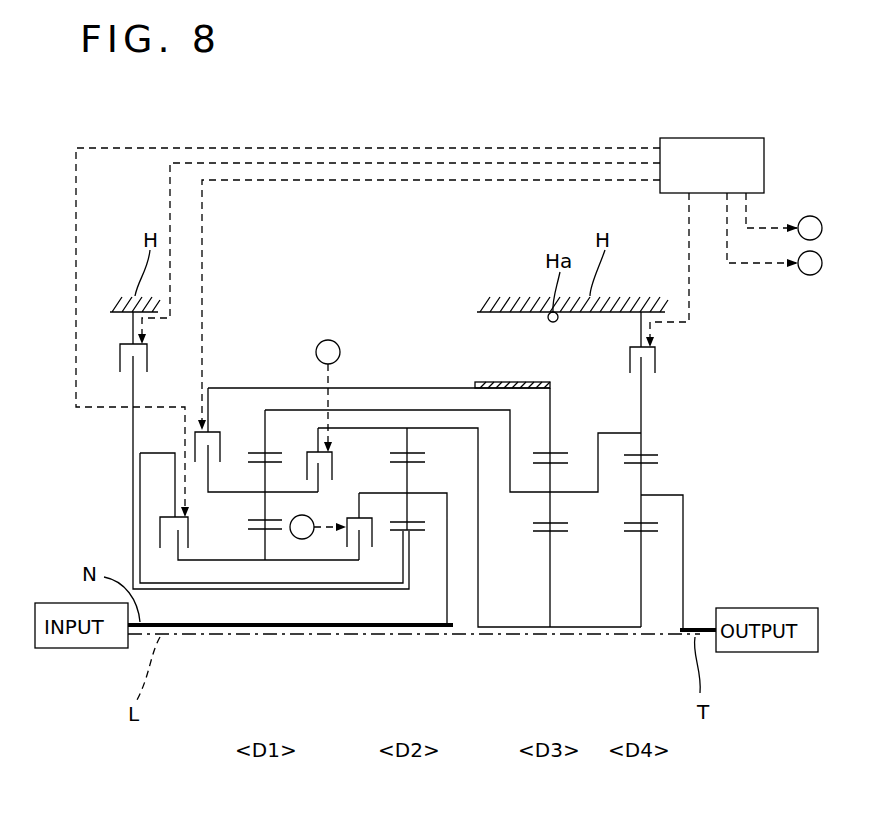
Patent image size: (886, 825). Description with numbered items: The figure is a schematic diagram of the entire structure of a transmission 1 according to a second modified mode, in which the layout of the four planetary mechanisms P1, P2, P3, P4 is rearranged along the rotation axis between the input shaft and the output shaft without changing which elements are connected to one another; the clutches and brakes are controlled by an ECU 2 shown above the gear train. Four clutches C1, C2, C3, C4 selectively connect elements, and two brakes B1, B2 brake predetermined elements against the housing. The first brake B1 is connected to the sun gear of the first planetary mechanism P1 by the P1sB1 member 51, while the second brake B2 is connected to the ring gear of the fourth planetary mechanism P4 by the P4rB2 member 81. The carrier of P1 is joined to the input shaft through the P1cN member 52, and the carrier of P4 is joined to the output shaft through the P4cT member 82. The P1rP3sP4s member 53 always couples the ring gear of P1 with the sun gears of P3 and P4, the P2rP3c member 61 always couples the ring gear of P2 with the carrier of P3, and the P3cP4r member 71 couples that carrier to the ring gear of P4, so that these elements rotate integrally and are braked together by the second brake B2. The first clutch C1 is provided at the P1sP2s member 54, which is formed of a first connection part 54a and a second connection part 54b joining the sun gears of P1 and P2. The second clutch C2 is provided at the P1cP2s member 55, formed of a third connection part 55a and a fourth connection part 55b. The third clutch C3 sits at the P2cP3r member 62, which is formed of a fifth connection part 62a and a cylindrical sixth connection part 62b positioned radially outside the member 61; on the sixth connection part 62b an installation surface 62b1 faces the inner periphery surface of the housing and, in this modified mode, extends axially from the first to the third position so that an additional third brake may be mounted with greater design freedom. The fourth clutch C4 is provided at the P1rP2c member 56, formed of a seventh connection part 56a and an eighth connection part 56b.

The transmission 1 is at (123, 125).
The ECU 2 is at (764, 168).
The P1sB1 member 51 is at (133, 397).
The P1cN member 52 is at (448, 602).
The P1rP3sP4s member 53 is at (608, 634).
The P1sP2s member 54 is at (207, 518).
The first connection part 54a is at (173, 468).
The second connection part 54b is at (170, 552).
The P1cP2s member 55 is at (389, 613).
The third connection part 55a is at (378, 494).
The fourth connection part 55b is at (332, 562).
The P1rP2c member 56 is at (453, 435).
The seventh connection part 56a is at (357, 428).
The eighth connection part 56b is at (288, 492).
The P2rP3c member 61 is at (515, 445).
The P2cP3r member 62 is at (372, 358).
The fifth connection part 62a is at (236, 489).
The sixth connection part 62b is at (218, 387).
The installation surface 62b1 is at (488, 382).
The P3cP4r member 71 is at (622, 433).
The P4rB2 member 81 is at (645, 398).
The P4cT member 82 is at (685, 528).
The first brake B1 is at (120, 357).
The second brake B2 is at (656, 360).
The first clutch C1 is at (188, 532).
The second clutch C2 is at (347, 540).
The third clutch C3 is at (195, 446).
The fourth clutch C4 is at (333, 467).
The first planetary mechanism P1 is at (418, 552).
The second planetary mechanism P2 is at (252, 550).
The third planetary mechanism P3 is at (560, 552).
The fourth planetary mechanism P4 is at (647, 552).